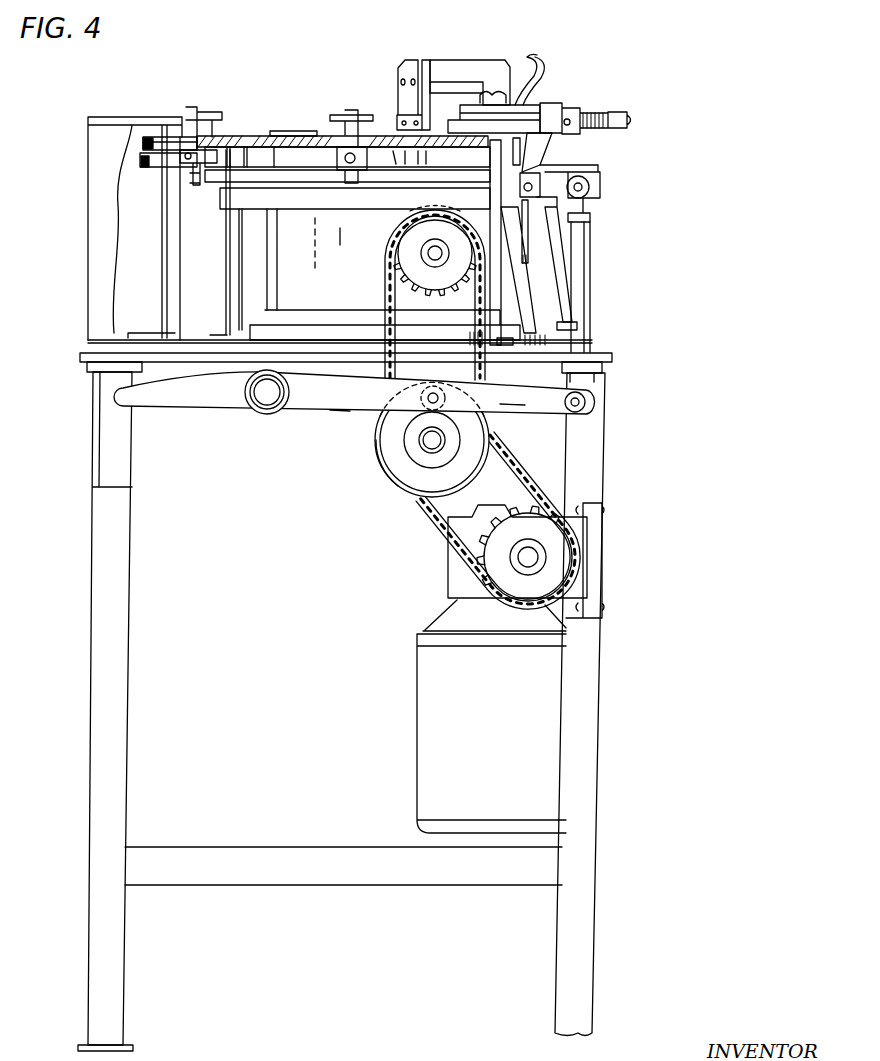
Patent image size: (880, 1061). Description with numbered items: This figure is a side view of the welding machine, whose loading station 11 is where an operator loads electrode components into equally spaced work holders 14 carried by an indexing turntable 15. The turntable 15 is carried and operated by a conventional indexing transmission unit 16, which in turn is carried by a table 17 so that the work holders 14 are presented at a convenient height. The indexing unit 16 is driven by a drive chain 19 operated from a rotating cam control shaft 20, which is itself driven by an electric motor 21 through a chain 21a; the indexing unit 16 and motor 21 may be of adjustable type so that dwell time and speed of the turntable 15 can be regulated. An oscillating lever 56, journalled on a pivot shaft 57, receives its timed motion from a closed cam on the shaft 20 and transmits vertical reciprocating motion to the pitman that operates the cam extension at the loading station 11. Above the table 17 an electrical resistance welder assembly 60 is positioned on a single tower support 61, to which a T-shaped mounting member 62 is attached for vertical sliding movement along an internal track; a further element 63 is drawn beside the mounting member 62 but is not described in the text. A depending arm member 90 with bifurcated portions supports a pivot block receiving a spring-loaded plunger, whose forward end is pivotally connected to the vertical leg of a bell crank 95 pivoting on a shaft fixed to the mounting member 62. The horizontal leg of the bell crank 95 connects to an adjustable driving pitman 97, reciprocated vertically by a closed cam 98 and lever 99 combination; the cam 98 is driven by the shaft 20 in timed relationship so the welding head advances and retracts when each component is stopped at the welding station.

The loading station 11 is at (122, 99).
The work holders 14 is at (198, 92).
The indexing turntable 15 is at (237, 134).
The indexing transmission unit 16 is at (260, 265).
The table 17 is at (90, 665).
The drive chain 19 is at (386, 302).
The cam control shaft 20 is at (430, 441).
The electric motor 21 is at (425, 714).
The chain 21a is at (433, 518).
The oscillating lever 56 is at (188, 405).
The pivot shaft 57 is at (265, 402).
The electrical resistance welder assembly 60 is at (580, 69).
The tower support 61 is at (508, 294).
The T-shaped mounting member 62 is at (520, 140).
The linkage arms 63 is at (517, 228).
The depending arm member 90 is at (568, 103).
The bell crank 95 is at (560, 181).
The adjustable driving pitman 97 is at (578, 325).
The closed cam 98 is at (403, 484).
The lever 99 is at (338, 406).